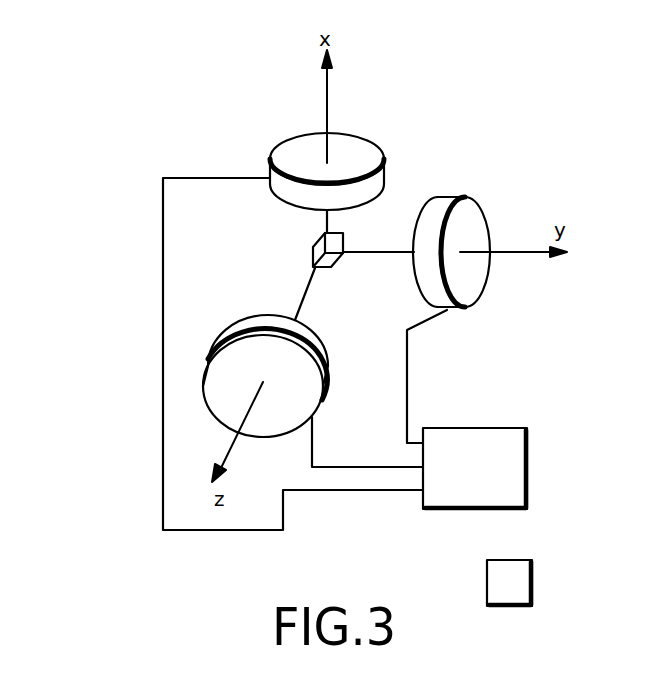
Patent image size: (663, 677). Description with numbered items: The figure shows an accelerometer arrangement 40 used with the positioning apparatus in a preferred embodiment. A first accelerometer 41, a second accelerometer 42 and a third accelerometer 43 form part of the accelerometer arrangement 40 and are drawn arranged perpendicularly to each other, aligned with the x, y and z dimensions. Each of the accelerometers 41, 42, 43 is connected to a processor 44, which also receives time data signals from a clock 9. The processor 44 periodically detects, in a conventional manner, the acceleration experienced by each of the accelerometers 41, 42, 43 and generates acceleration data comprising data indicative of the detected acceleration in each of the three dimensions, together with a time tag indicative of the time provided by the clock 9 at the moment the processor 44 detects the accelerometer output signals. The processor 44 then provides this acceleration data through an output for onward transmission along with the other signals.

The accelerometer arrangement 40 is at (108, 358).
The first accelerometer 41 is at (267, 166).
The second accelerometer 42 is at (490, 228).
The third accelerometer 43 is at (323, 352).
The processor 44 is at (466, 428).
The clock 9 is at (535, 590).